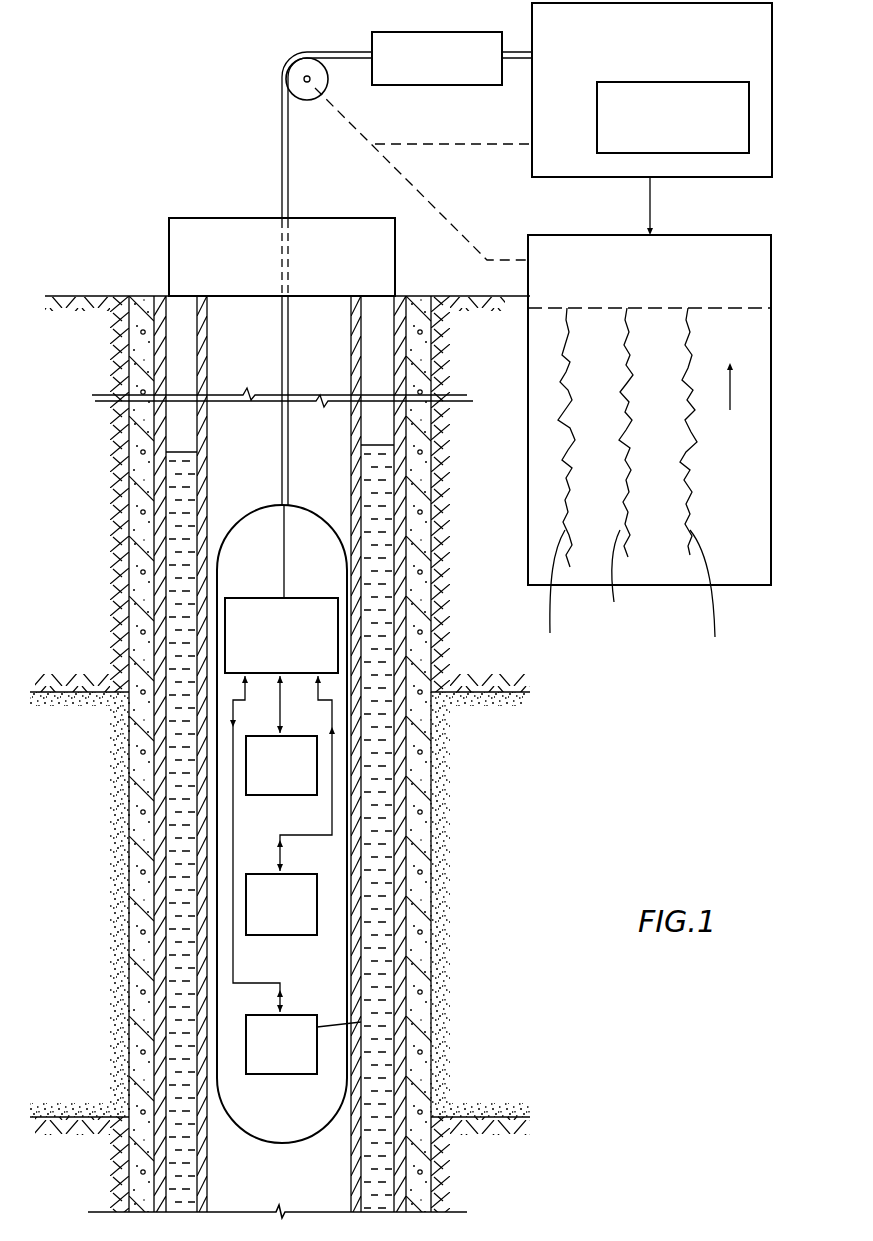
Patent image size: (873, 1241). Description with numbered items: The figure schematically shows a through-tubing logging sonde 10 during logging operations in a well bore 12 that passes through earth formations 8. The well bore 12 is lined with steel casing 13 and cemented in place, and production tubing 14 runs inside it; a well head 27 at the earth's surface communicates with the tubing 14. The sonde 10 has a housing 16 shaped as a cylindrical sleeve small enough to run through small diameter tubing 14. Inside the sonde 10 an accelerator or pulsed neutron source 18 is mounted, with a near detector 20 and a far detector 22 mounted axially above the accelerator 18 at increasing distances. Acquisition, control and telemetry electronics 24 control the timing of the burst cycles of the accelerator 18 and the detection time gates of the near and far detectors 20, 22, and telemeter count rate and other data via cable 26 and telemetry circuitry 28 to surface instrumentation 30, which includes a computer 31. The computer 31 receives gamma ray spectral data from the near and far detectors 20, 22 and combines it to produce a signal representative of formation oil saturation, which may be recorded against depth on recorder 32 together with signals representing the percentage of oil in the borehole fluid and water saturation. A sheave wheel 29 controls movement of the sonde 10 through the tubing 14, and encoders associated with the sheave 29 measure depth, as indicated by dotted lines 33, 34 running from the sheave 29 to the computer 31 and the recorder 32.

The formations 8 is at (485, 938).
The logging sonde 10 is at (368, 836).
The well bore 12 is at (178, 460).
The steel casing 13 is at (158, 524).
The tubing 14 is at (361, 1108).
The housing 16 is at (246, 1022).
The accelerator or pulsed neutron source 18 is at (361, 1022).
The near detector 20 is at (317, 908).
The far detector 22 is at (246, 768).
The acquisition, control and telemetry electronics 24 is at (225, 607).
The cable 26 is at (292, 62).
The well head 27 is at (207, 218).
The telemetry circuitry 28 is at (438, 32).
The sheave wheel 29 is at (298, 79).
The surface instrumentation 30 is at (772, 30).
The computer 31 is at (749, 118).
The recorder 32 is at (765, 272).
The dotted line 33 is at (465, 145).
The dotted line 34 is at (467, 241).